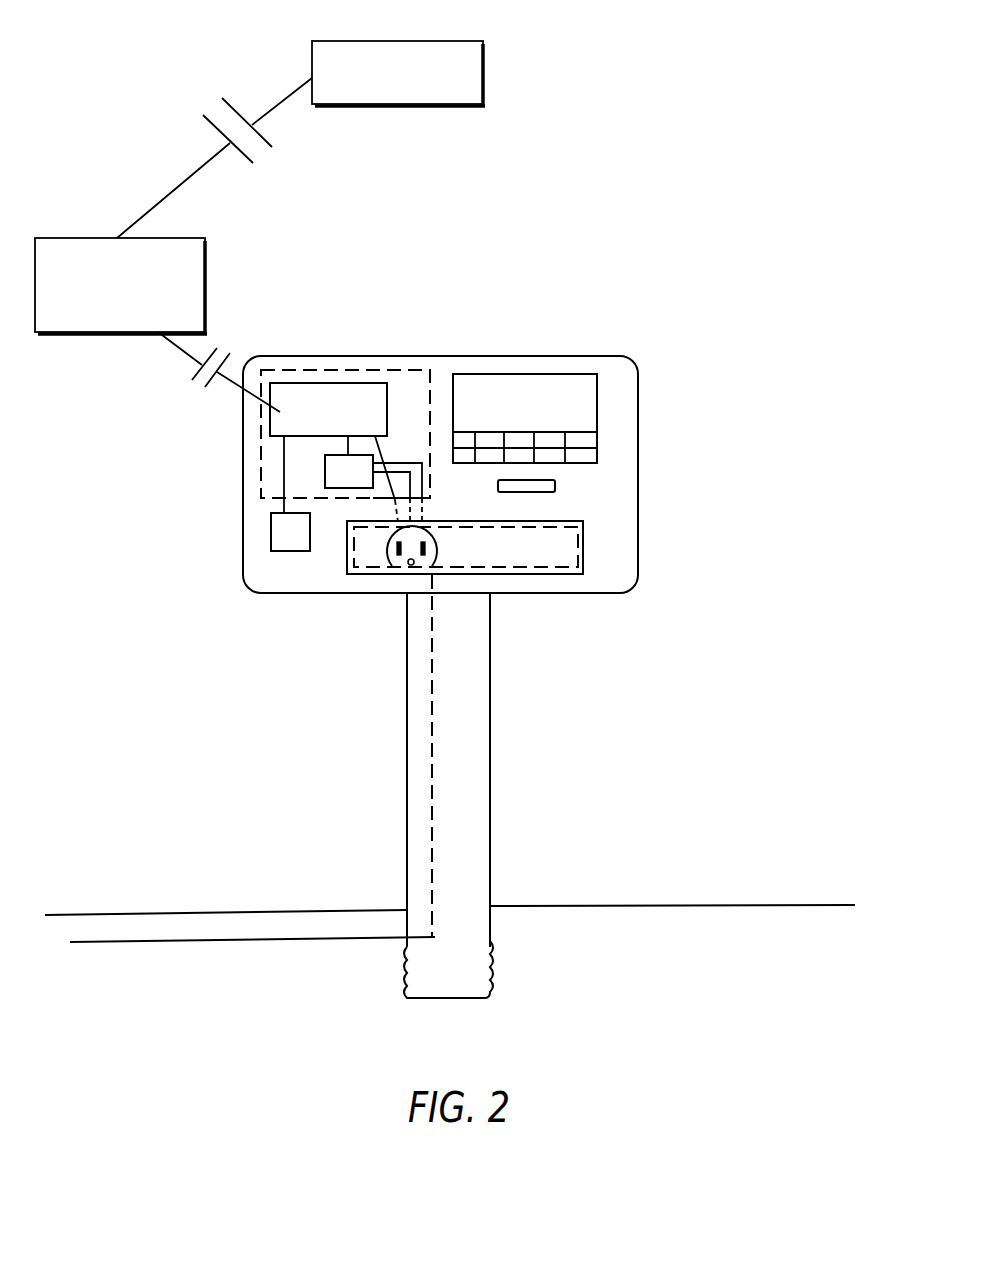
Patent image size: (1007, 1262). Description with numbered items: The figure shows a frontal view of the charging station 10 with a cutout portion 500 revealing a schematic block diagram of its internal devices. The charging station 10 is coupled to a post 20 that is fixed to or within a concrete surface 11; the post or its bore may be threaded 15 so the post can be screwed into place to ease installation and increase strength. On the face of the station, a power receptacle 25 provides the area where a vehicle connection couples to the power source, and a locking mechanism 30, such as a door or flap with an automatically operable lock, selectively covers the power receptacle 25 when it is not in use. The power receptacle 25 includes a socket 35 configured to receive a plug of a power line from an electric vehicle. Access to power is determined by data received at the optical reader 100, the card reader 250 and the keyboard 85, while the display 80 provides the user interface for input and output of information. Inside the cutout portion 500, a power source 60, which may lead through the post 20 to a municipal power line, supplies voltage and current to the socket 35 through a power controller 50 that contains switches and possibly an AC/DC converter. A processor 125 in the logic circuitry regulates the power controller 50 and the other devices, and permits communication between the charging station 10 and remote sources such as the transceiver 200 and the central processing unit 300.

The central processing unit 300 is at (485, 58).
The transceiver 200 is at (205, 252).
The charging station 10 is at (607, 298).
The cutout portion 500 is at (420, 380).
The processor 125 is at (317, 390).
The power controller 50 is at (337, 473).
The optical reader 100 is at (290, 540).
The display 80 is at (583, 405).
The keyboard 85 is at (587, 455).
The card reader 250 is at (556, 486).
The power receptacle 25 is at (350, 573).
The locking mechanism 30 is at (513, 558).
The socket 35 is at (408, 564).
The post 20 is at (490, 725).
The concrete surface 11 is at (680, 905).
The power source 60 is at (250, 937).
The threaded 15 is at (403, 975).